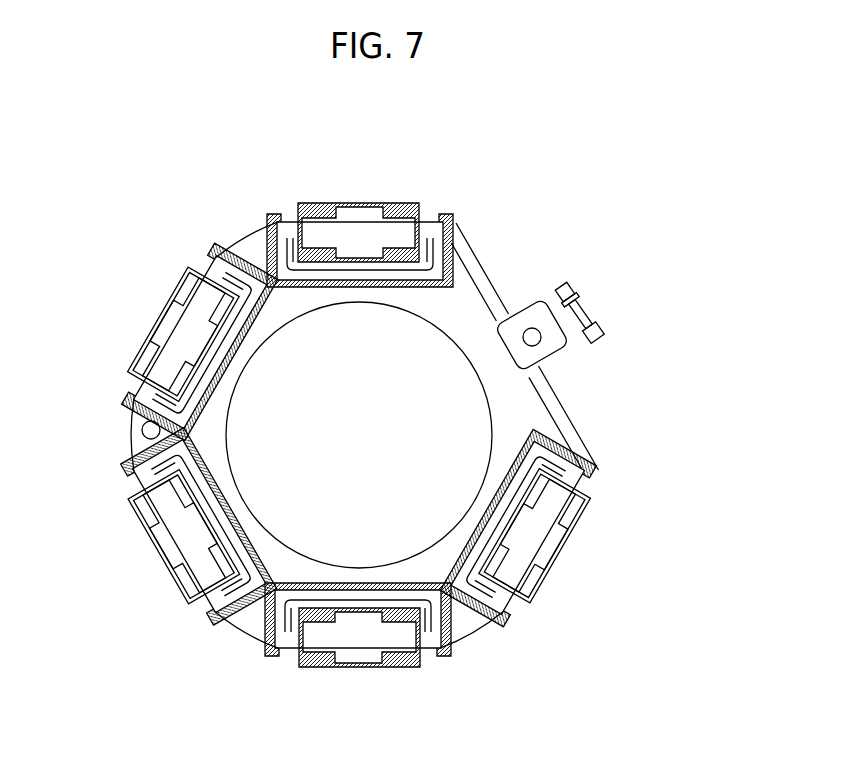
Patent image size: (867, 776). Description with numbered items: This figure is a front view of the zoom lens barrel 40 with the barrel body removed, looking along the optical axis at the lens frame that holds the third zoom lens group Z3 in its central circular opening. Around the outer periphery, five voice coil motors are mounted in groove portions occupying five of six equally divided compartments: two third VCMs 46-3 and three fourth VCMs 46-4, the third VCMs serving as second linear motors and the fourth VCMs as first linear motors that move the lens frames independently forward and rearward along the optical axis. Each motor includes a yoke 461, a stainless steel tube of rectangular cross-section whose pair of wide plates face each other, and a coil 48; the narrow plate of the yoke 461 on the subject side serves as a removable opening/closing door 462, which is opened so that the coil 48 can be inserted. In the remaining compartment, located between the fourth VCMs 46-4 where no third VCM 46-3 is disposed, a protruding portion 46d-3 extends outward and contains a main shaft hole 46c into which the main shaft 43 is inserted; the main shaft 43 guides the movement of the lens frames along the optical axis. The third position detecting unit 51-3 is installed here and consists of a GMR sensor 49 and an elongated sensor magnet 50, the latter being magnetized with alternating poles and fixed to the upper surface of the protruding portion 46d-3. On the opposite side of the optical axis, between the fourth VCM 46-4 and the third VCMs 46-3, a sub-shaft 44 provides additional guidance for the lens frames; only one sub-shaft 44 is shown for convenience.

The zoom lens barrel 40 is at (646, 436).
The main shaft 43 is at (538, 344).
The sub-shaft 44 is at (143, 434).
The third VCM 46-3 is at (157, 307).
The fourth VCM 46-4 is at (326, 202).
The main shaft hole 46c is at (547, 347).
The protruding portion 46d-3 is at (540, 360).
The coil 48 is at (448, 216).
The GMR sensor 49 is at (567, 287).
The sensor magnet 50 is at (550, 293).
The third position detecting unit 51-3 is at (578, 260).
The yoke 461 is at (408, 203).
The opening/closing door 462 is at (363, 214).
The third zoom lens group Z3 is at (428, 400).